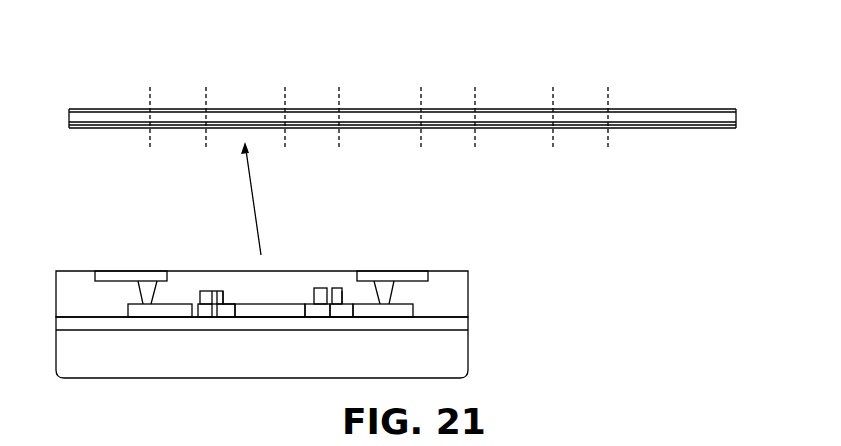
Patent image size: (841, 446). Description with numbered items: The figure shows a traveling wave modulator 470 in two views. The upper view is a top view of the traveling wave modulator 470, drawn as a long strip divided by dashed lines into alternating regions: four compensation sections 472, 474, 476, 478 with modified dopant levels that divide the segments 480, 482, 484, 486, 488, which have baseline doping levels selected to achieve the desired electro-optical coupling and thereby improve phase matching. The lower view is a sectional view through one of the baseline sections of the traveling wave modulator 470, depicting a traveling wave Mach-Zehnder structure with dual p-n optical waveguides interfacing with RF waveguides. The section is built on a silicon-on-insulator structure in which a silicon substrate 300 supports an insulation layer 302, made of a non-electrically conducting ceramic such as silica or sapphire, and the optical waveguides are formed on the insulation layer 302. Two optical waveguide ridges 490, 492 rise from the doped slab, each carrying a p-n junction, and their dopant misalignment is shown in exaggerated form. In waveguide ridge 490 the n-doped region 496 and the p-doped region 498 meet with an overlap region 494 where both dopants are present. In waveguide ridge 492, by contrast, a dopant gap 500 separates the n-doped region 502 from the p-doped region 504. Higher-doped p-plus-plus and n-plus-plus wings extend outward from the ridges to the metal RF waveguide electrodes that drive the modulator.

The traveling wave modulator 470 is at (393, 79).
The compensation section 472 is at (197, 130).
The compensation section 474 is at (333, 131).
The compensation section 476 is at (467, 131).
The compensation section 478 is at (600, 130).
The segment 480 is at (128, 110).
The segment 482 is at (267, 110).
The segment 484 is at (393, 131).
The segment 486 is at (535, 110).
The segment 488 is at (675, 110).
The optical waveguide ridge 490 is at (212, 280).
The optical waveguide ridge 492 is at (328, 278).
The overlap region 494 is at (217, 318).
The n-doped region 496 is at (224, 301).
The p-doped region 498 is at (195, 318).
The dopant gap 500 is at (327, 318).
The n-doped region 502 is at (312, 318).
The p-doped region 504 is at (343, 303).
The insulation layer 302 is at (463, 325).
The silicon substrate 300 is at (463, 362).